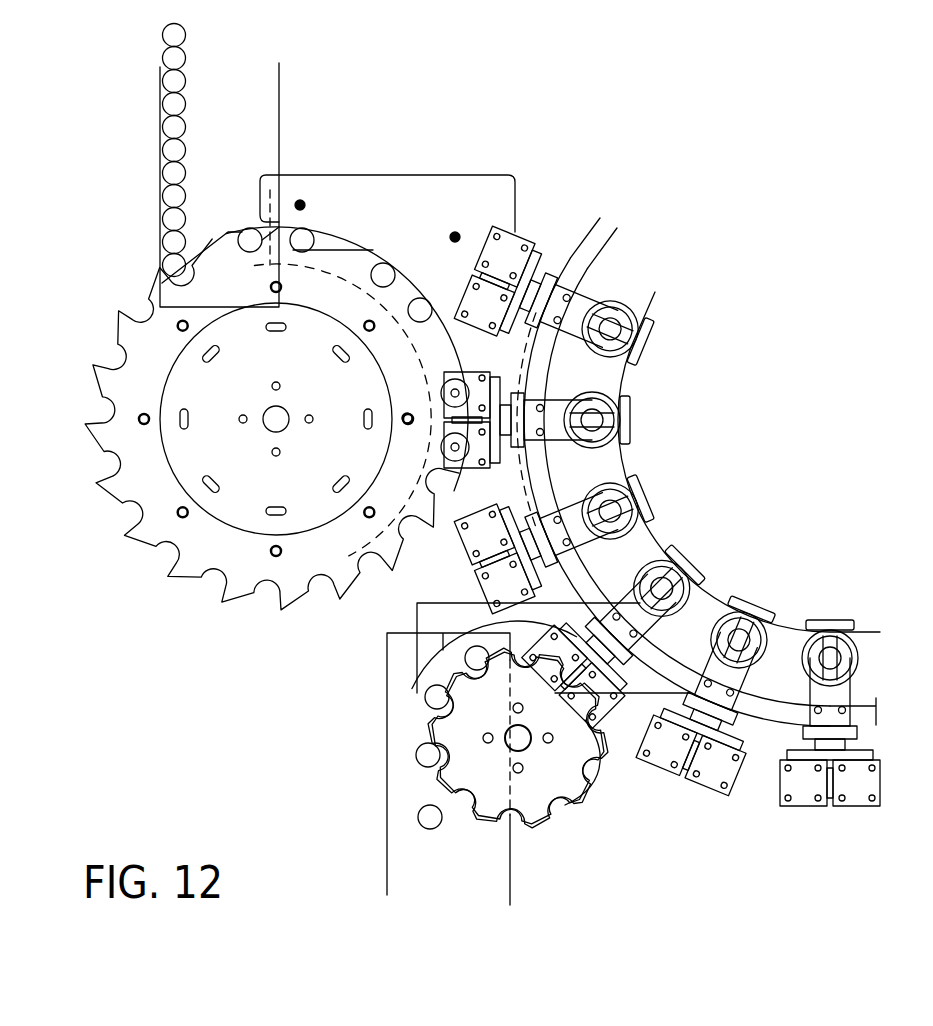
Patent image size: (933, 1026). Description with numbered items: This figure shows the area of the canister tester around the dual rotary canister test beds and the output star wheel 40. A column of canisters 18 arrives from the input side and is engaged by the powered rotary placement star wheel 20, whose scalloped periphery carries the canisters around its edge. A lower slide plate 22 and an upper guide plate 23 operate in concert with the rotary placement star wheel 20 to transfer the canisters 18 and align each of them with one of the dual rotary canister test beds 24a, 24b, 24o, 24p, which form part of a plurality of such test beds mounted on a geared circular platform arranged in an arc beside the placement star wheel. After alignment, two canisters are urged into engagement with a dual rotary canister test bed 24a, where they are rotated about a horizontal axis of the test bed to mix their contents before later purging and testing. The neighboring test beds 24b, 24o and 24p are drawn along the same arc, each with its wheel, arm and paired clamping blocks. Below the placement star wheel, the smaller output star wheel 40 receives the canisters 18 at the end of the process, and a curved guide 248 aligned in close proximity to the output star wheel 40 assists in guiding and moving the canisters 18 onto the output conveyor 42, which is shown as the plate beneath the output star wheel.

The canisters 18 is at (177, 103).
The rotary placement star wheel 20 is at (220, 582).
The lower slide plate 22 is at (348, 286).
The upper guide plate 23 is at (362, 183).
The dual rotary canister test bed 24a is at (497, 392).
The dual rotary canister test bed 24b is at (512, 232).
The dual rotary canister test bed 24o is at (703, 598).
The dual rotary canister test bed 24p is at (480, 537).
The curved guide 248 is at (430, 607).
The output star wheel 40 is at (593, 807).
The output conveyor 42 is at (398, 778).